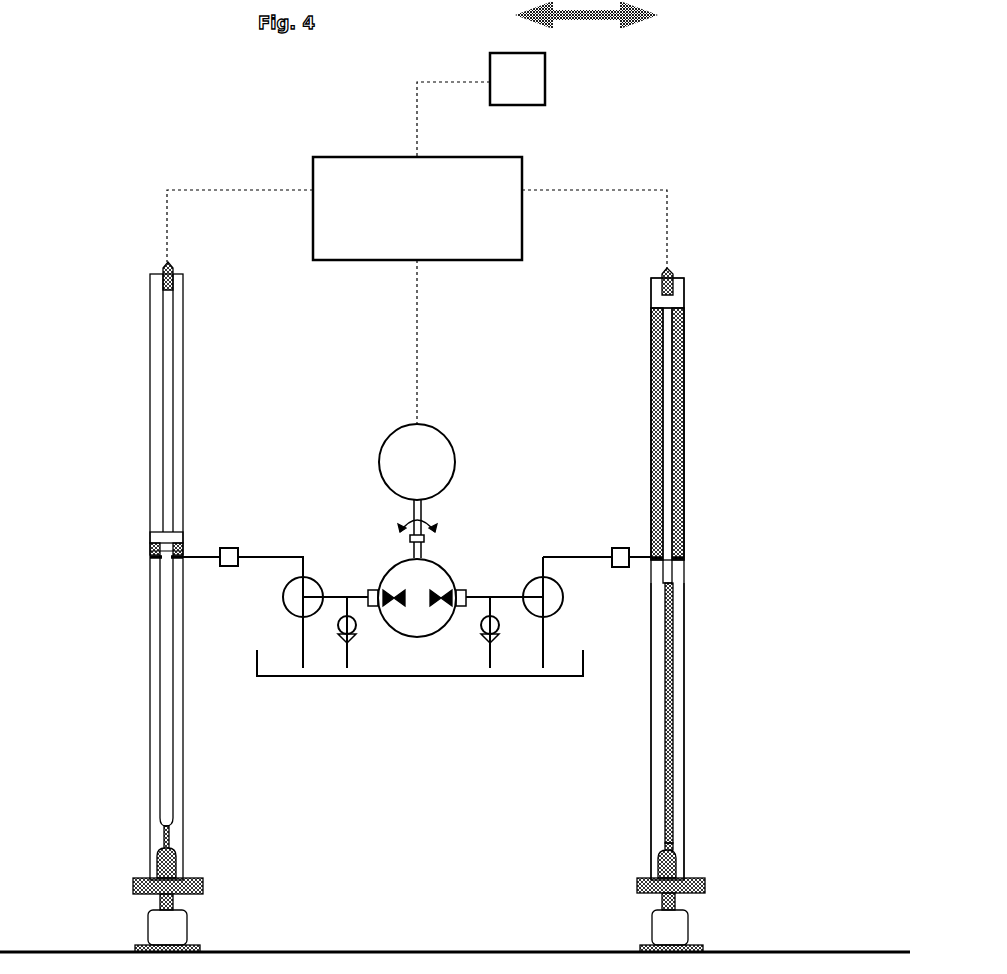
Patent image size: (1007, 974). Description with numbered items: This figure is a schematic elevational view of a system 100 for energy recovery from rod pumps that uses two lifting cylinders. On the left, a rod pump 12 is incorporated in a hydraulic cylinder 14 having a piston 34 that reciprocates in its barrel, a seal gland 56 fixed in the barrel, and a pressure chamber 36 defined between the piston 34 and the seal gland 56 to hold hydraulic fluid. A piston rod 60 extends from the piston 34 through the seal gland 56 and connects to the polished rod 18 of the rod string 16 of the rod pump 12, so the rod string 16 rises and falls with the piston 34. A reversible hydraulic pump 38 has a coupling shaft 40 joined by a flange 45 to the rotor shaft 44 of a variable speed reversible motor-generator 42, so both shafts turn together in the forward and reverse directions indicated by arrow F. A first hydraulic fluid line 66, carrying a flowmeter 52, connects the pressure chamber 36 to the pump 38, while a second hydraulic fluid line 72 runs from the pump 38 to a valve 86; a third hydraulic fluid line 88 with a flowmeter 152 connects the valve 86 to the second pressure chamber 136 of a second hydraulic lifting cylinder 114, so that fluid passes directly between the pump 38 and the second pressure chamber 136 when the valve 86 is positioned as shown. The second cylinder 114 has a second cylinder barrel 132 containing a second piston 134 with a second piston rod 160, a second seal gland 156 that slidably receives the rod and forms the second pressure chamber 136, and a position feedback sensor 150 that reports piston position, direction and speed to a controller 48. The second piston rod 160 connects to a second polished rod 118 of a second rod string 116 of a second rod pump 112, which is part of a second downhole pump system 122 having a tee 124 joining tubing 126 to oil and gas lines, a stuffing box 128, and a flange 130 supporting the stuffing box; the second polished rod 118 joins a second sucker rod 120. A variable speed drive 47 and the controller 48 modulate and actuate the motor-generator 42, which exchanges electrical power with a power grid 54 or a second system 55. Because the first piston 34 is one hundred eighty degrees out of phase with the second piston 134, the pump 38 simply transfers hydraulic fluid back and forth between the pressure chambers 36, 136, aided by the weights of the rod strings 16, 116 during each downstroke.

The system for energy recovery 100 is at (718, 170).
The rod pump 12 is at (210, 882).
The hydraulic cylinder 14 is at (190, 398).
The rod string 16 is at (233, 852).
The polished rod 18 is at (175, 850).
The piston 34 is at (183, 537).
The pressure chamber 36 is at (150, 551).
The reversible hydraulic pump 38 is at (435, 590).
The coupling shaft 40 is at (425, 556).
The variable speed reversible motor-generator 42 is at (440, 432).
The rotor shaft 44 is at (412, 517).
The flange 45 is at (410, 539).
The arrow F is at (437, 527).
The variable speed drive 47 is at (472, 208).
The controller 48 is at (515, 240).
The flowmeter 52 is at (231, 546).
The power grid 54 is at (617, 95).
The second system 55 is at (525, 93).
The seal gland 56 is at (180, 562).
The piston rod 60 is at (170, 770).
The first hydraulic fluid line 66 is at (255, 556).
The second hydraulic fluid line 72 is at (505, 597).
The valve 86 is at (560, 591).
The third hydraulic fluid line 88 is at (600, 555).
The second rod pump 112 is at (775, 745).
The second hydraulic lifting cylinder 114 is at (757, 434).
The second rod string 116 is at (686, 630).
The second polished rod 118 is at (670, 800).
The second sucker rod 120 is at (672, 925).
The second downhole pump system 122 is at (709, 922).
The tee 124 is at (650, 936).
The tubing 126 is at (660, 903).
The stuffing box 128 is at (676, 866).
The flange 130 is at (637, 882).
The second cylinder barrel 132 is at (686, 418).
The second piston 134 is at (688, 306).
The second pressure chamber 136 is at (684, 370).
The position feedback sensor 150 is at (672, 276).
The flowmeter 152 is at (620, 548).
The second seal gland 156 is at (686, 581).
The second piston rod 160 is at (668, 355).